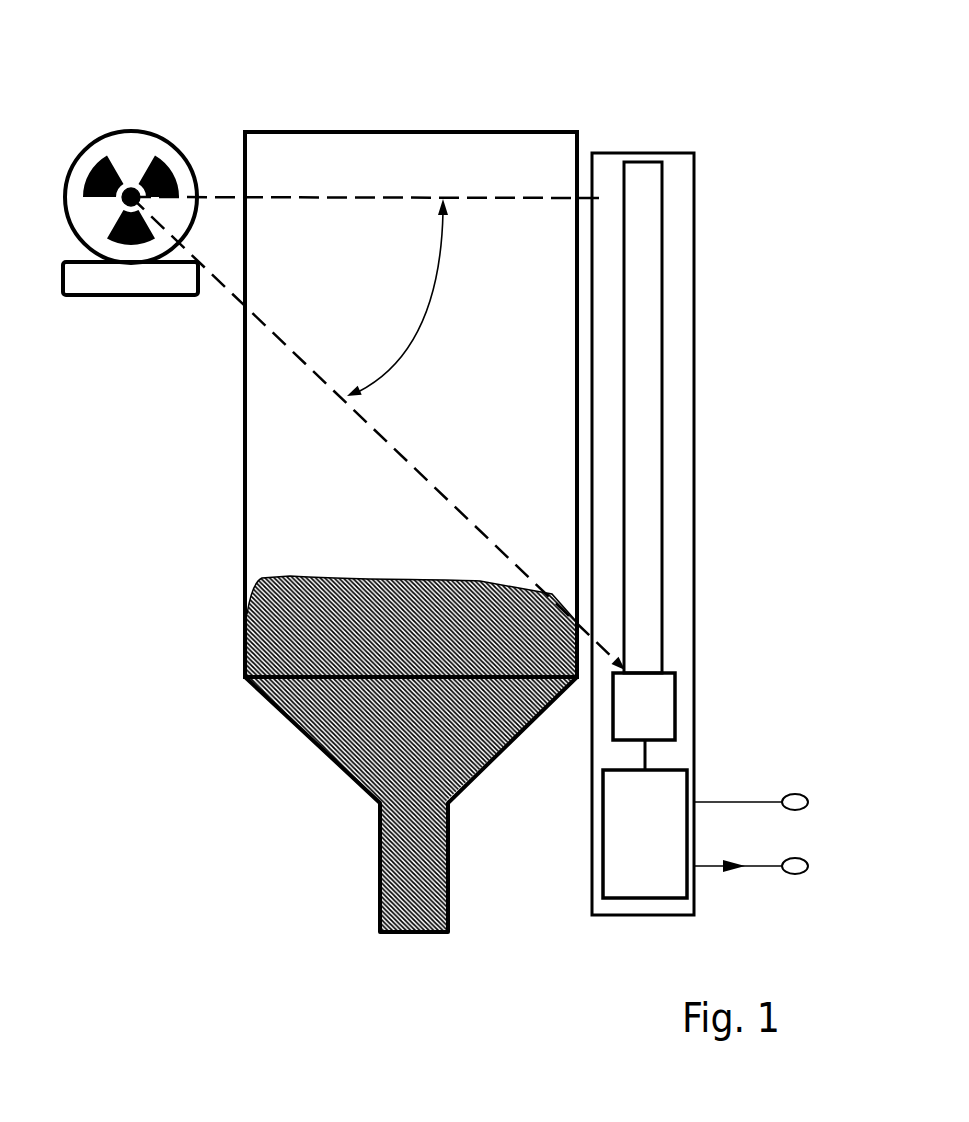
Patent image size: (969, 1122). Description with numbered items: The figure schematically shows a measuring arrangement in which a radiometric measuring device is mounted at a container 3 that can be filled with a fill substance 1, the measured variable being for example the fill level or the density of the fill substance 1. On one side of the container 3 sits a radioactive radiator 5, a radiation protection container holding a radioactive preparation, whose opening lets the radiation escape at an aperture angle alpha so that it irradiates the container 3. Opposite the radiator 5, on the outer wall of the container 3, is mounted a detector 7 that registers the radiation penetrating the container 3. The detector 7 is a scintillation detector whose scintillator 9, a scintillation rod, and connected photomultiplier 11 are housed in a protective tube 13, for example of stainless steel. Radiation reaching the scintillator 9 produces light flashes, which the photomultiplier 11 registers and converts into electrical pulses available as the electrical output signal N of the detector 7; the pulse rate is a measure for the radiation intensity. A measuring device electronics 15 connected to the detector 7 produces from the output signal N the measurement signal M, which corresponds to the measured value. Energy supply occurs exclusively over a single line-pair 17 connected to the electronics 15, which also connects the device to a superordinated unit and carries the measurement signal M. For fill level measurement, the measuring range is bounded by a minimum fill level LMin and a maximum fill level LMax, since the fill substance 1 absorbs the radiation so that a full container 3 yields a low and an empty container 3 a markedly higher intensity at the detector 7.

The fill substance 1 is at (298, 612).
The container 3 is at (245, 455).
The radioactive radiator 5 is at (160, 138).
The detector 7 is at (742, 528).
The scintillator 9 is at (645, 515).
The photomultiplier 11 is at (645, 707).
The protective tube 13 is at (694, 222).
The measuring device electronics 15 is at (645, 790).
The line-pair 17 is at (820, 785).
The electrical output signal N is at (645, 757).
The measurement signal M is at (733, 875).
The maximum fill level LMax is at (490, 197).
The minimum fill level LMin is at (273, 698).
The aperture angle alpha is at (398, 297).